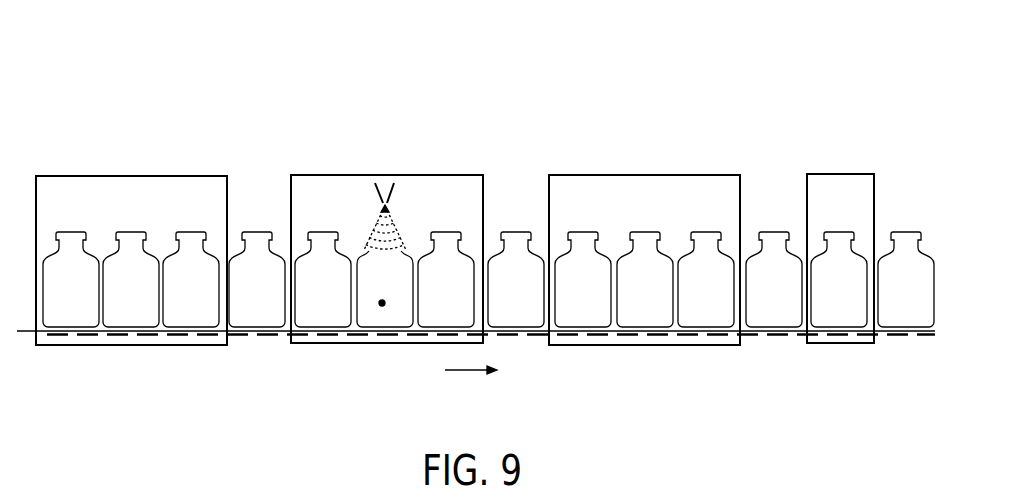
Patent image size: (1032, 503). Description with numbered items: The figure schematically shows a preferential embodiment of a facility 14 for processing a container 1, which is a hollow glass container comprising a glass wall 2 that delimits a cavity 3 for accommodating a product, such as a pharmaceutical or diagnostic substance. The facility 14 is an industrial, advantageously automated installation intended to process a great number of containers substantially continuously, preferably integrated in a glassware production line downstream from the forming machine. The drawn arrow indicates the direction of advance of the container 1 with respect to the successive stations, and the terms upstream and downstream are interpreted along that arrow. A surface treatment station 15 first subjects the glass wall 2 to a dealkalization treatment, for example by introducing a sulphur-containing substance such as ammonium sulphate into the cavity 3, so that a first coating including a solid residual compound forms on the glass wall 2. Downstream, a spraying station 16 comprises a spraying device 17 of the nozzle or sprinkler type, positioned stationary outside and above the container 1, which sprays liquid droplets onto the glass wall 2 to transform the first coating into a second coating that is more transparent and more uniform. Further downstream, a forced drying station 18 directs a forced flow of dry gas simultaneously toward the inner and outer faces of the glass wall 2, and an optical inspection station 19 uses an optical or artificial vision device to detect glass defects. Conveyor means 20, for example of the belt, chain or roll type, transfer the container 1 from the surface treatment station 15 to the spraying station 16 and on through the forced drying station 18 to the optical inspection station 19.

The container 1 is at (390, 335).
The glass wall 2 is at (352, 296).
The accommodation cavity 3 is at (382, 307).
The facility 14 is at (218, 92).
The surface treatment station 15 is at (131, 348).
The spraying station 16 is at (347, 170).
The spraying device 17 is at (387, 180).
The forced drying station 18 is at (637, 170).
The optical inspection station 19 is at (840, 168).
The conveyor means 20 is at (27, 333).